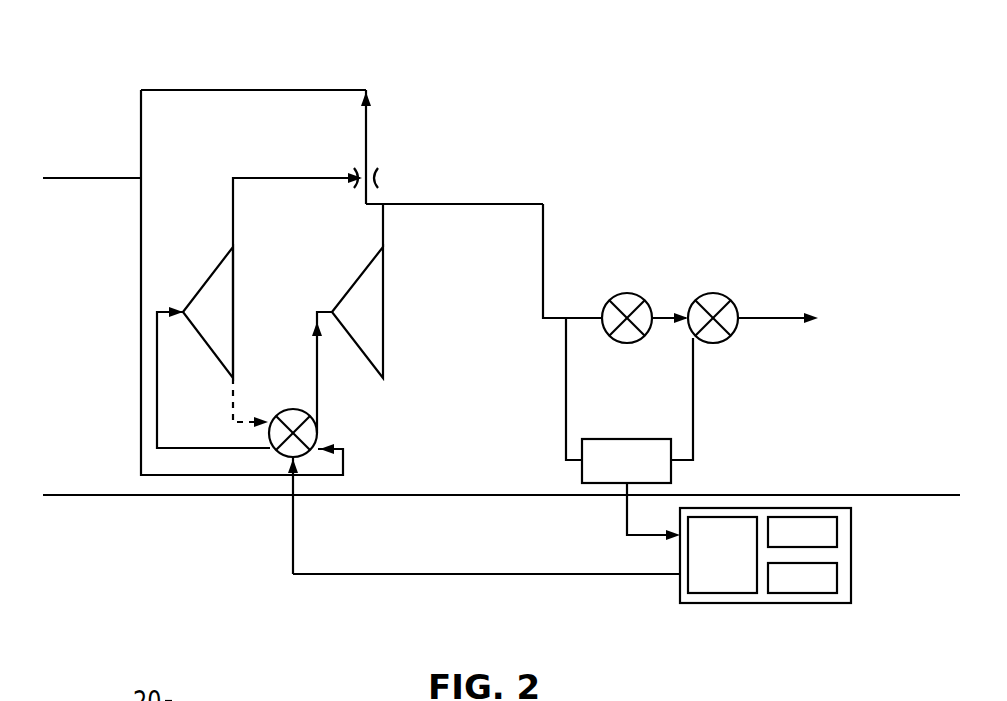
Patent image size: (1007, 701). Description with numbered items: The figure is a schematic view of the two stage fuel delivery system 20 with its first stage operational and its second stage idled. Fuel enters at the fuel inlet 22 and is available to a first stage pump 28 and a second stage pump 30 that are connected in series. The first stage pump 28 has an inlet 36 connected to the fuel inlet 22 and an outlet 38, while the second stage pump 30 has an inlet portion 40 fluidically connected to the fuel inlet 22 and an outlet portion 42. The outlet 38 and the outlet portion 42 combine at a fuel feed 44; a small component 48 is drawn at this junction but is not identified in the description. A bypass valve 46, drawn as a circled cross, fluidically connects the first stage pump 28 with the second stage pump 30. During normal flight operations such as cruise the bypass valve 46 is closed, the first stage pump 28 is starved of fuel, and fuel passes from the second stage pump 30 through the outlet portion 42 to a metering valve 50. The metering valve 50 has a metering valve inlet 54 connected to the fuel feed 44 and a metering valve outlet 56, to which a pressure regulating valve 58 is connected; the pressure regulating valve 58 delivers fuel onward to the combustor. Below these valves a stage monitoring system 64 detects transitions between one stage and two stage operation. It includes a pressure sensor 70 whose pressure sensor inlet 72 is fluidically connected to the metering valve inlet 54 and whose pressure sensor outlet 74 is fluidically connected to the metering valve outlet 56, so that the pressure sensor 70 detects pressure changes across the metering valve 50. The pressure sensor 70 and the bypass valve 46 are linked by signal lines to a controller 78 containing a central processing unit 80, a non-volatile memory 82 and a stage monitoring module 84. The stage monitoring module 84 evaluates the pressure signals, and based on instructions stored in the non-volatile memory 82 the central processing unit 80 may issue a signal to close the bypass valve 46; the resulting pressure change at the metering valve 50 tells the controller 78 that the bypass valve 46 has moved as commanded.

The two stage fuel delivery system 20 is at (166, 21).
The fuel inlet 22 is at (52, 212).
The first stage pump 28 is at (203, 385).
The second stage pump 30 is at (402, 327).
The inlet 36 is at (130, 397).
The outlet 38 is at (272, 216).
The inlet portion 40 is at (352, 410).
The outlet portion 42 is at (420, 243).
The fuel feed 44 is at (477, 168).
The bypass valve 46 is at (257, 506).
The junction / check element 48 is at (412, 156).
The metering valve 50 is at (620, 300).
The metering valve inlet 54 is at (531, 358).
The metering valve outlet 56 is at (682, 283).
The pressure regulating valve 58 is at (738, 372).
The stage monitoring system 64 is at (797, 382).
The pressure sensor 70 is at (700, 466).
The pressure sensor inlet 72 is at (566, 402).
The pressure sensor outlet 74 is at (720, 420).
The controller 78 is at (672, 592).
The central processing unit (CPU) 80 is at (702, 615).
The non-volatile memory 82 is at (830, 522).
The stage monitoring module 84 is at (804, 615).